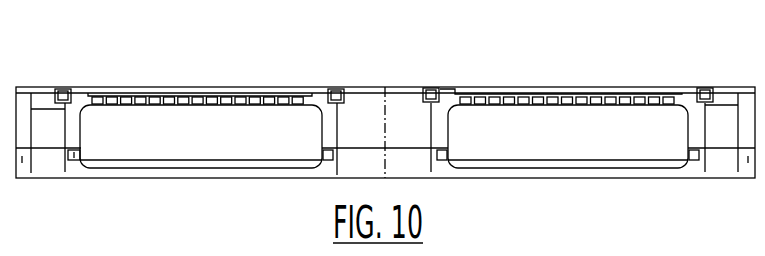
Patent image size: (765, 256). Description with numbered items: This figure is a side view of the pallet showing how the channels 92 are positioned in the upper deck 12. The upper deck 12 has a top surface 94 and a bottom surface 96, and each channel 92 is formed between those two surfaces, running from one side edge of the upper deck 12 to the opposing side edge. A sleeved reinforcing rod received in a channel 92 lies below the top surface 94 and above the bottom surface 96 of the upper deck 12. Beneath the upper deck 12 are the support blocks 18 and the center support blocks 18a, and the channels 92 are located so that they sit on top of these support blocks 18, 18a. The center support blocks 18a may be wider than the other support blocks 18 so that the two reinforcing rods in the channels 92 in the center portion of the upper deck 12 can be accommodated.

The channel 92 is at (62, 89).
The top surface 94 is at (172, 91).
The bottom surface 96 is at (170, 105).
The upper deck 12 is at (592, 92).
The support block 18 is at (75, 125).
The center support block 18a is at (440, 125).